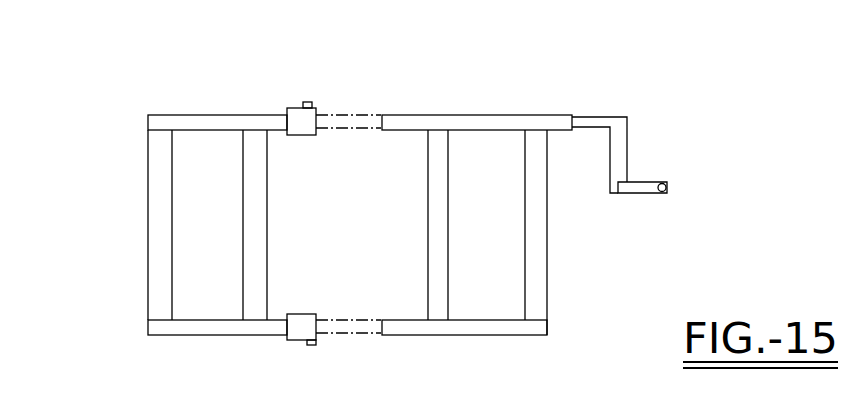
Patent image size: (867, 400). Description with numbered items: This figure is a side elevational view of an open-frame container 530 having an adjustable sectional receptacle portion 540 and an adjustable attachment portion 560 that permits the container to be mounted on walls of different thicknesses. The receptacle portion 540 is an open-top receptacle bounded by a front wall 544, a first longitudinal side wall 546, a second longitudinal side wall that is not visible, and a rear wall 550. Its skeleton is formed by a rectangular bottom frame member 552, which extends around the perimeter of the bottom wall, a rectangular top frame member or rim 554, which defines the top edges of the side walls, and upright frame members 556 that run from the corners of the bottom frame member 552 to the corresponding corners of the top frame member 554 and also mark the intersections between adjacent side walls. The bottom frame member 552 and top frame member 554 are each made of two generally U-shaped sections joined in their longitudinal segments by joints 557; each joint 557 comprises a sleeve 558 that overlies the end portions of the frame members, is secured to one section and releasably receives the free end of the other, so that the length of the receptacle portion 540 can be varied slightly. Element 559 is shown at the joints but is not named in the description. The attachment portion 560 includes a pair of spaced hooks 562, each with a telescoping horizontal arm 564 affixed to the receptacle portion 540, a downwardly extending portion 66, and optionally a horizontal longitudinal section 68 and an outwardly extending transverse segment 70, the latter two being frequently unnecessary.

The open-frame container 530 is at (520, 348).
The receptacle portion 540 is at (143, 146).
The front wall 544 is at (148, 226).
The first longitudinal side wall 546 is at (428, 226).
The rear wall 550 is at (547, 250).
The bottom frame member 552 is at (215, 337).
The top frame member 554 is at (218, 114).
The upright frame members 556 is at (155, 288).
The joint 557 is at (316, 96).
The sleeve 558 is at (305, 135).
The pin 559 is at (312, 104).
The attachment portion 560 is at (629, 104).
The hook 562 is at (652, 172).
The telescoping horizontal arm 564 is at (585, 73).
The downwardly extending portion 66 is at (628, 133).
The horizontal longitudinal section 68 is at (638, 194).
The horizontal transverse segment 70 is at (668, 186).